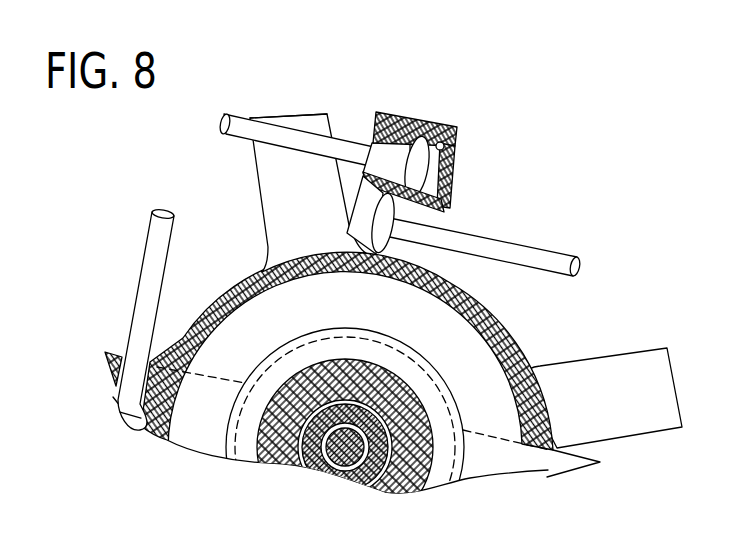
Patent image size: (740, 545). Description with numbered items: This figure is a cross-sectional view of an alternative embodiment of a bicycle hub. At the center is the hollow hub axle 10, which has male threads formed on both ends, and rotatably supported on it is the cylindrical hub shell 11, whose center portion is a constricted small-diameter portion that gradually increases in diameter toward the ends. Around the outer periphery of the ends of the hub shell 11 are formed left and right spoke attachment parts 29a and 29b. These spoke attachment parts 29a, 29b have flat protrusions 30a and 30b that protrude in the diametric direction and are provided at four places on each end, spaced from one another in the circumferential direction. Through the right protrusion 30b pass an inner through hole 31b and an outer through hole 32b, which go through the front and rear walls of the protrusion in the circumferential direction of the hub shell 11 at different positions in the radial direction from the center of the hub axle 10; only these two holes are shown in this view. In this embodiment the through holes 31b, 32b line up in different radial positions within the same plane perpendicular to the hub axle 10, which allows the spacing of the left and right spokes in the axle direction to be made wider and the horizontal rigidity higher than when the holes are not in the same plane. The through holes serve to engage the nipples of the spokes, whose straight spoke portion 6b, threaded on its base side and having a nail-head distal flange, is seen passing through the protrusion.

The straight spoke portion 6b is at (248, 122).
The hub axle 10 is at (387, 420).
The hub shell 11 is at (512, 338).
The spoke attachment part 29a is at (319, 142).
The spoke attachment part 29b is at (442, 140).
The protrusion 30a is at (304, 113).
The protrusion 30b is at (430, 121).
The inner through hole 31b is at (435, 220).
The outer through hole 32b is at (447, 150).